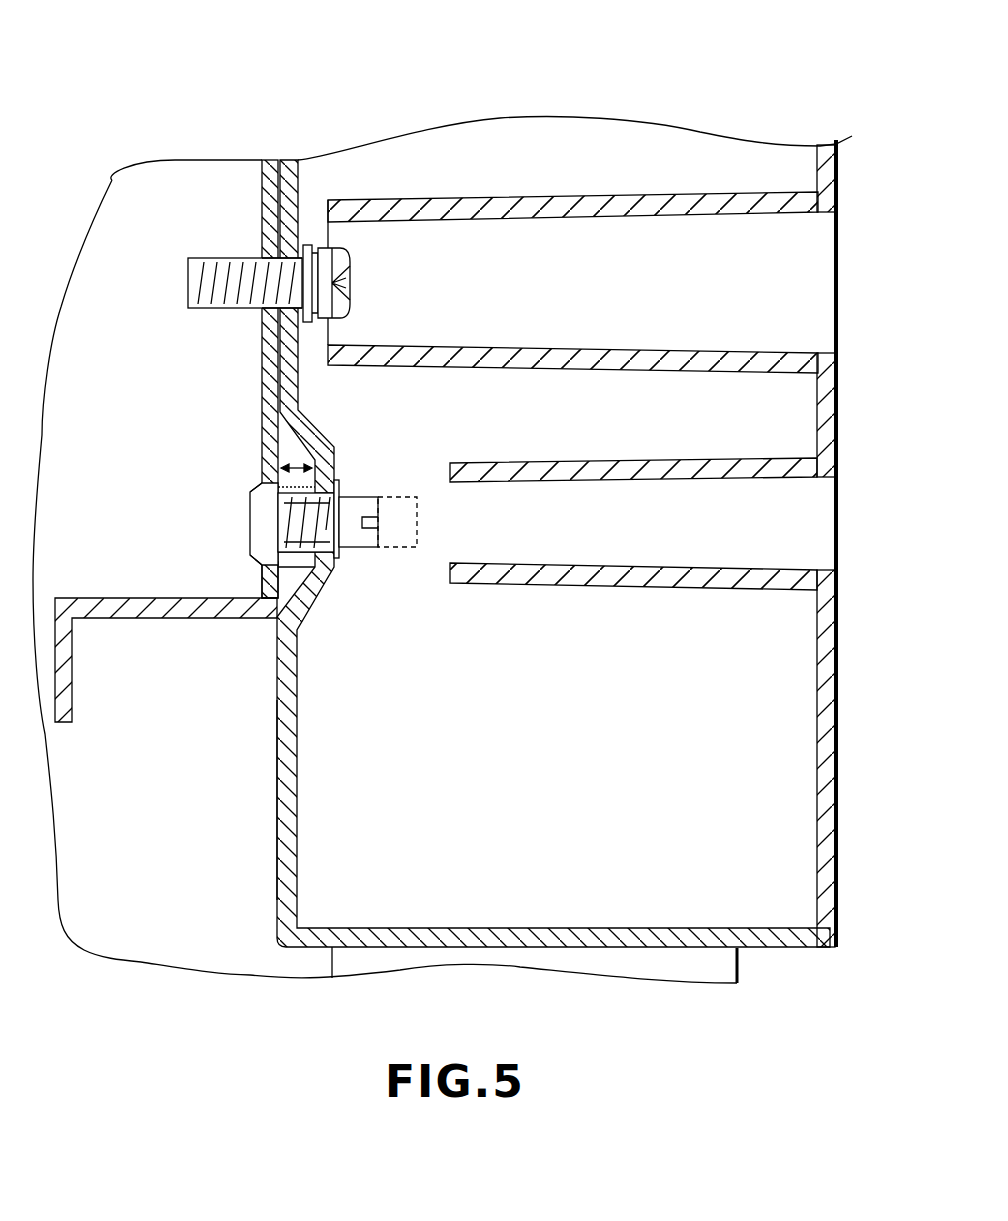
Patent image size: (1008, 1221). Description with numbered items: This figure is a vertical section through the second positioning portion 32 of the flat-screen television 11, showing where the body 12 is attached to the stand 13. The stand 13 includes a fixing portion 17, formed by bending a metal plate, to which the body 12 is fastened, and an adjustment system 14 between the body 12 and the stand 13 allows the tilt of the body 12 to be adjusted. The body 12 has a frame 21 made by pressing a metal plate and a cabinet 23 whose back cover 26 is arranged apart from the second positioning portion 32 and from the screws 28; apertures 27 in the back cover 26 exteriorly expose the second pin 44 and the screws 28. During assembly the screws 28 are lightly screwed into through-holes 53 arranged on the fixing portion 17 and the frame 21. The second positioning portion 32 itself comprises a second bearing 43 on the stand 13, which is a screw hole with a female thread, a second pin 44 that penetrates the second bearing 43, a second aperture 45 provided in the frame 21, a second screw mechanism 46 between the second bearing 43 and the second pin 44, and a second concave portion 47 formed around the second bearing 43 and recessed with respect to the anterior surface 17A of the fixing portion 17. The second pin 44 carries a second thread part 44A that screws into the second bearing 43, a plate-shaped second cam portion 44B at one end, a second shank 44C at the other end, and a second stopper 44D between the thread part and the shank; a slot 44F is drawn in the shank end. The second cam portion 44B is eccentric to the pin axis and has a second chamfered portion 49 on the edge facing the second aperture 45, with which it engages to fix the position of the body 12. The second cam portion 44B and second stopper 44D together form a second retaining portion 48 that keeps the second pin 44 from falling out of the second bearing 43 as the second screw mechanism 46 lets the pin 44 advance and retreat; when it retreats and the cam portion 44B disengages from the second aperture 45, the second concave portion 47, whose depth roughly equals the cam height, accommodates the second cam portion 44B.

The flat-screen television 11 is at (312, 72).
The body 12 is at (192, 188).
The stand 13 is at (738, 964).
The adjustment system 14 is at (482, 728).
The fixing portion 17 is at (294, 852).
The anterior surface of the fixing portion 17A is at (276, 852).
The frame 21 is at (262, 375).
The cabinet 23 is at (838, 790).
The back cover 26 is at (838, 174).
The apertures 27 is at (838, 292).
The screws 28 is at (344, 266).
The second positioning portion 32 is at (388, 612).
The second bearing 43 is at (324, 490).
The second pin 44 is at (325, 507).
The second thread part 44A is at (296, 570).
The second cam portion 44B is at (258, 506).
The second shank 44C is at (360, 508).
The second stopper 44D is at (342, 557).
The slot 44F is at (376, 522).
The second aperture 45 is at (266, 470).
The second screw mechanism 46 is at (320, 557).
The second concave portion 47 is at (310, 432).
The second retaining portion 48 is at (268, 570).
The second chamfered portion 49 is at (250, 490).
The through-holes 53 is at (290, 252).